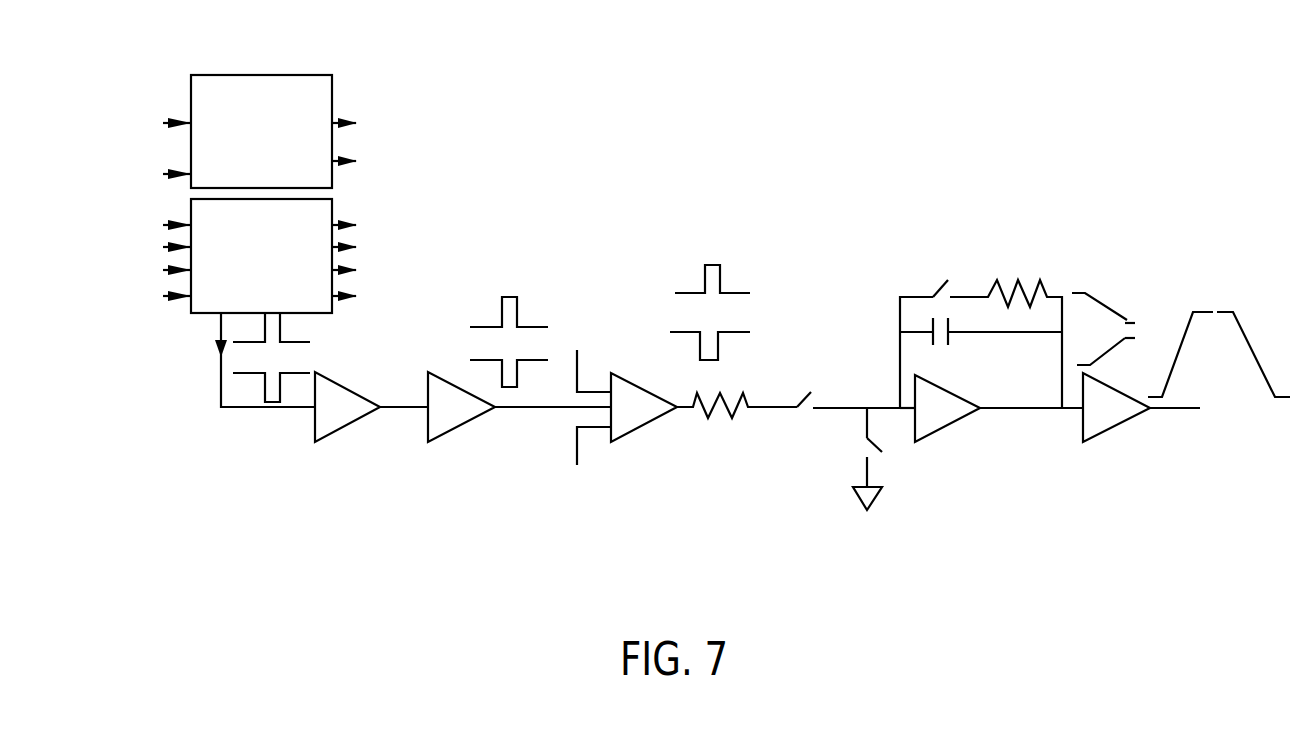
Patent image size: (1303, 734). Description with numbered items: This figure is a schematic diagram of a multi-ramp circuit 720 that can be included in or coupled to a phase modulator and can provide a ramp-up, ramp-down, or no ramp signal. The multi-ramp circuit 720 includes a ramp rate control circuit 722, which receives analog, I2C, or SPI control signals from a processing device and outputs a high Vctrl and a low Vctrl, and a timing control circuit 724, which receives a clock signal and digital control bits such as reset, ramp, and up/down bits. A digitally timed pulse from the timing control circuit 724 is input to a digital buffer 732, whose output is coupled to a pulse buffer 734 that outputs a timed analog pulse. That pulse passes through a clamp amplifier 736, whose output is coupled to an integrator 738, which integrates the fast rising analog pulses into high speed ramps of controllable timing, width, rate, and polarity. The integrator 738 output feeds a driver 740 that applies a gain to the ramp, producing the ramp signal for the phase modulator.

The multi-ramp circuit 720 is at (738, 72).
The ramp rate control circuit 722 is at (322, 76).
The timing control circuit 724 is at (199, 313).
The digital buffer 732 is at (343, 427).
The pulse buffer 734 is at (457, 427).
The clamp amplifier 736 is at (640, 430).
The integrator 738 is at (947, 427).
The driver 740 is at (1110, 427).